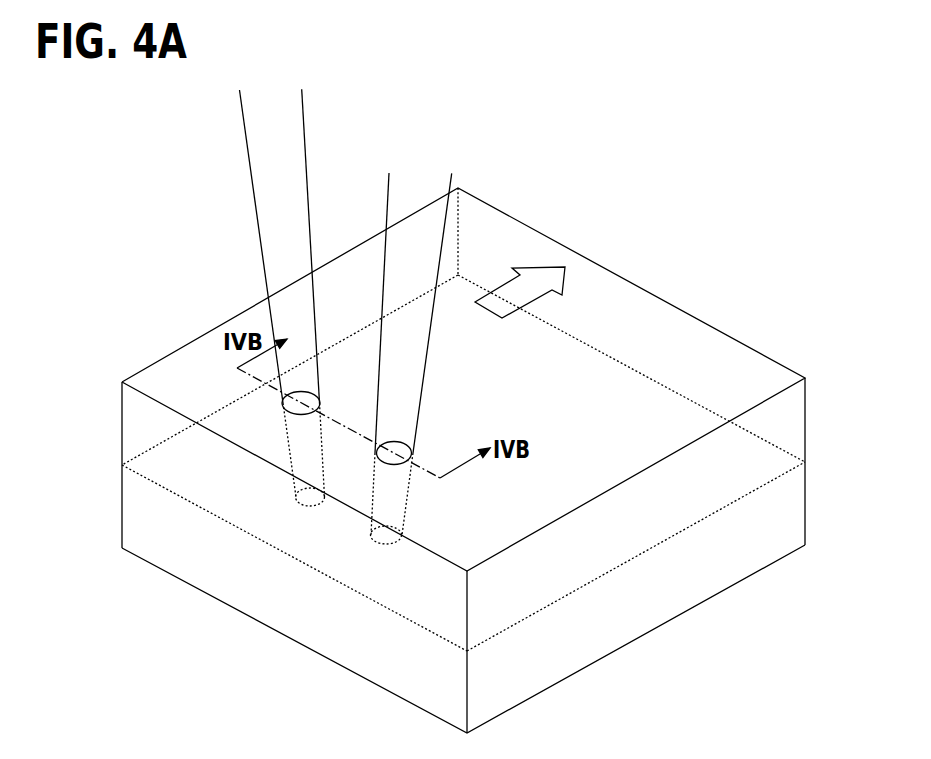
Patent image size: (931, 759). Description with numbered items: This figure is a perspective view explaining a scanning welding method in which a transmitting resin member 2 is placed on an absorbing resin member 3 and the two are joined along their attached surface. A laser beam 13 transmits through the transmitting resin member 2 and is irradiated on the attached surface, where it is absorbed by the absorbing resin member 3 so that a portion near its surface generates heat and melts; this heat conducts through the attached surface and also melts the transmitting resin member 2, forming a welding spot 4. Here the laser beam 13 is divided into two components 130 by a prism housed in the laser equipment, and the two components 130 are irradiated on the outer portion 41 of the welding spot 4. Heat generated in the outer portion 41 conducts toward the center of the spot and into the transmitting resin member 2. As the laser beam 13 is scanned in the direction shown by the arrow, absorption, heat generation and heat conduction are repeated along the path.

The transmitting resin member 2 is at (176, 380).
The absorbing resin member 3 is at (165, 552).
The welding spot 4 is at (324, 544).
The outer portion 41 is at (308, 495).
The laser beam 13 is at (317, 271).
The components 130 is at (261, 252).